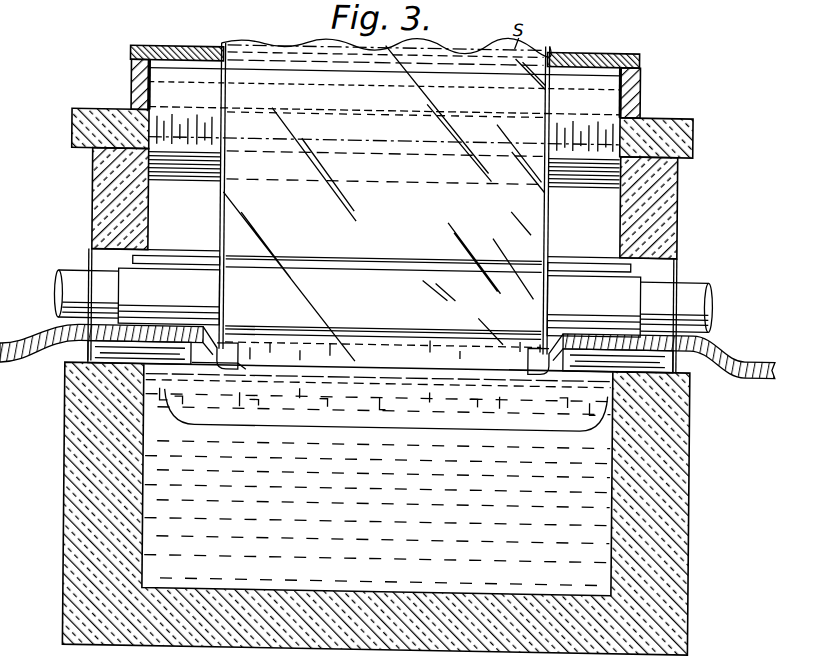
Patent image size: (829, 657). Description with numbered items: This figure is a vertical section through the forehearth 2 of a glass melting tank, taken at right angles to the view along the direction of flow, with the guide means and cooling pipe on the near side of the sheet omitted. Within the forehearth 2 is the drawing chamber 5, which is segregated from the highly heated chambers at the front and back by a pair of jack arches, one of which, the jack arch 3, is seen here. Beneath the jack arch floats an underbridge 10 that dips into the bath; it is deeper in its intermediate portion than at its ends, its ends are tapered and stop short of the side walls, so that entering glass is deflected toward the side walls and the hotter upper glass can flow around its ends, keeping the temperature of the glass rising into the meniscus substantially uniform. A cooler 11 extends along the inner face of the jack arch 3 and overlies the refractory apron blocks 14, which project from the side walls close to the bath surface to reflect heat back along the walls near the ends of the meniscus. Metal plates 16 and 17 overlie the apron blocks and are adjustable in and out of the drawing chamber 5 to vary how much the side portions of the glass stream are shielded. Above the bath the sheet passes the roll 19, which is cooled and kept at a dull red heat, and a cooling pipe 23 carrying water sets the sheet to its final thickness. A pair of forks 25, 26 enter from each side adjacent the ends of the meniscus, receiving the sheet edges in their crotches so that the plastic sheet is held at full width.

The forehearth 2 is at (608, 537).
The jack arch 3 is at (605, 131).
The drawing chamber 5 is at (383, 199).
The underbridge 10 is at (377, 428).
The cooler 11 is at (233, 373).
The refractory apron block 14 is at (120, 364).
The metal plate 16 is at (82, 358).
The metal plate 17 is at (690, 372).
The roll 19 is at (383, 303).
The cooling pipe 23 is at (188, 266).
The fork 25 is at (228, 353).
The fork 26 is at (533, 351).